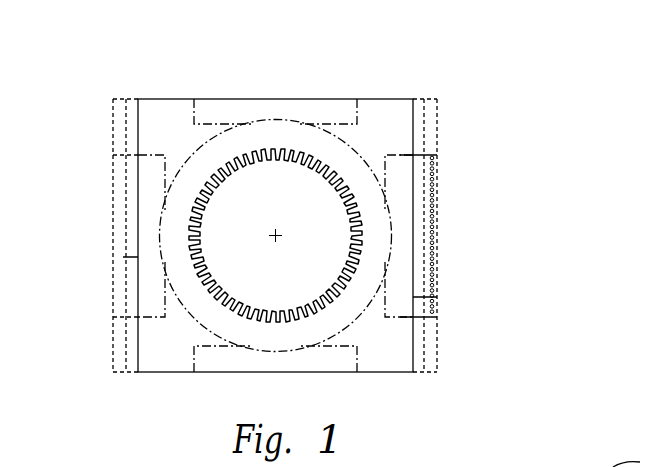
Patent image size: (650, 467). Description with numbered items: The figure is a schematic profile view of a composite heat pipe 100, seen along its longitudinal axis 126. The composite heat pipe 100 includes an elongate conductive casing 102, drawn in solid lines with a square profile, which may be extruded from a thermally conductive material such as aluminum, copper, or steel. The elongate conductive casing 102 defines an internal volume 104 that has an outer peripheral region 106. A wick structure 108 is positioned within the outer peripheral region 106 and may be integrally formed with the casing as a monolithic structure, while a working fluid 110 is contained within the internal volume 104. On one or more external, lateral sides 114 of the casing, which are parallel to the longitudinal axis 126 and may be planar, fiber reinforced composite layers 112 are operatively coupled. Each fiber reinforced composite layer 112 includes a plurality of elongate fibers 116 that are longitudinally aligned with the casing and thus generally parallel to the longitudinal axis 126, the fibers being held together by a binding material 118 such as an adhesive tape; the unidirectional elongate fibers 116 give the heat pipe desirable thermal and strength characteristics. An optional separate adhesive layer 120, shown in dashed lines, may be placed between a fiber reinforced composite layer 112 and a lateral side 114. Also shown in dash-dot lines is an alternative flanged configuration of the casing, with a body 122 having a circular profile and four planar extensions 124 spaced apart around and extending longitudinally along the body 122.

The composite heat pipe 100 is at (447, 43).
The elongate conductive casing 102 is at (275, 98).
The internal volume 104 is at (325, 259).
The outer peripheral region 106 is at (268, 171).
The wick structure 108 is at (275, 235).
The working fluid 110 is at (257, 282).
The fiber reinforced composite layer 112 is at (111, 186).
The lateral side 114 is at (123, 257).
The elongate fibers 116 is at (432, 156).
The binding material 118 is at (434, 238).
The adhesive layer 120 is at (128, 223).
The body 122 is at (193, 152).
The planar extensions 124 is at (368, 113).
The longitudinal axis 126 is at (270, 245).